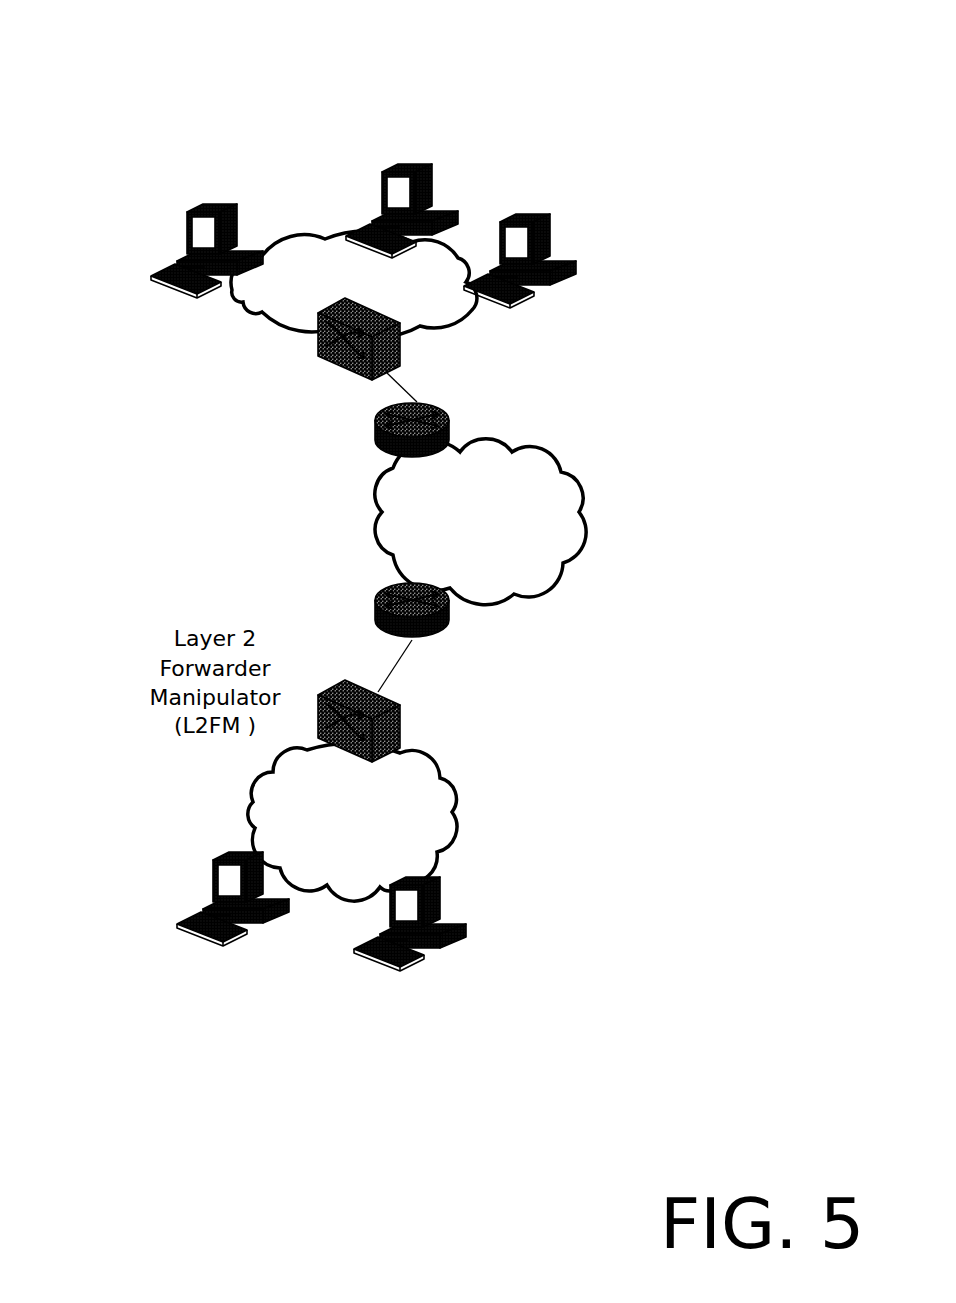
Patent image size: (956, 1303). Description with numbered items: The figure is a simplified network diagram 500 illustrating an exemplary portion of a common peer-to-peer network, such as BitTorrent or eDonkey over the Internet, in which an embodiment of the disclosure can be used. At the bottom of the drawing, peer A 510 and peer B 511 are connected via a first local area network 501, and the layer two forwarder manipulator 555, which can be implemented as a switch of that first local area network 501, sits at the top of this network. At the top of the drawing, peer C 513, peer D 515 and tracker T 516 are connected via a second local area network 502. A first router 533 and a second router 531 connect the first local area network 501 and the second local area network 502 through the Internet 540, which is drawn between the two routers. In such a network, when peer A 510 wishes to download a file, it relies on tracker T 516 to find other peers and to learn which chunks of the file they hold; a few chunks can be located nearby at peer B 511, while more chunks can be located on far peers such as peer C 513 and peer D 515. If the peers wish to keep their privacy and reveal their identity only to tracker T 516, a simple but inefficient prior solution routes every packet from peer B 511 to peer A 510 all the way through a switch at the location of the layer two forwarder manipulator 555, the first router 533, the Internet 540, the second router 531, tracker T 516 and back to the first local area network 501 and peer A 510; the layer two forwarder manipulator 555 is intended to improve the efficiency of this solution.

The network diagram 500 is at (62, 81).
The local area network L1 501 is at (407, 822).
The local area network L2 502 is at (311, 301).
The peer A 510 is at (461, 940).
The peer B 511 is at (202, 916).
The peer C 513 is at (181, 257).
The peer D 515 is at (379, 225).
The tracker T 516 is at (540, 262).
The router R2 531 is at (450, 418).
The router R1 533 is at (355, 587).
The Internet 540 is at (546, 522).
The L2FM 555 is at (412, 721).